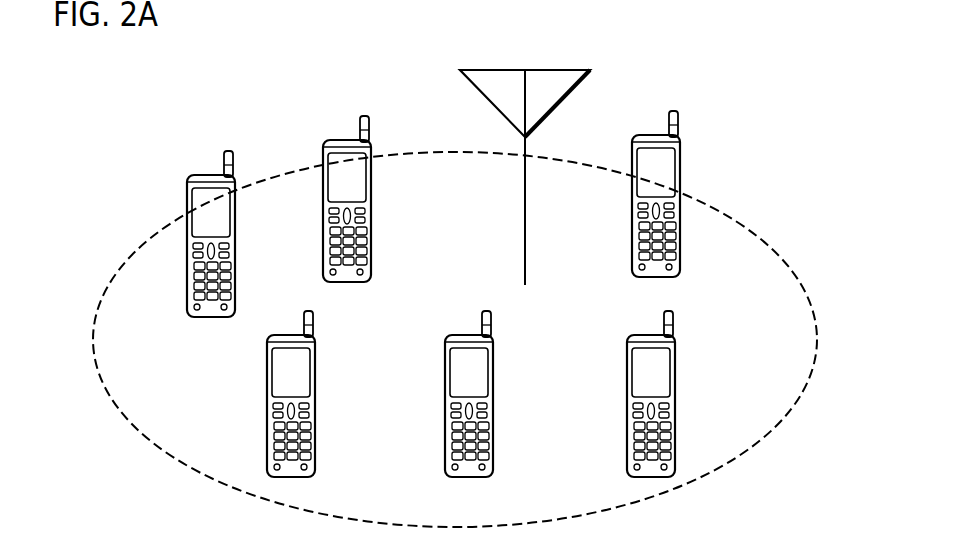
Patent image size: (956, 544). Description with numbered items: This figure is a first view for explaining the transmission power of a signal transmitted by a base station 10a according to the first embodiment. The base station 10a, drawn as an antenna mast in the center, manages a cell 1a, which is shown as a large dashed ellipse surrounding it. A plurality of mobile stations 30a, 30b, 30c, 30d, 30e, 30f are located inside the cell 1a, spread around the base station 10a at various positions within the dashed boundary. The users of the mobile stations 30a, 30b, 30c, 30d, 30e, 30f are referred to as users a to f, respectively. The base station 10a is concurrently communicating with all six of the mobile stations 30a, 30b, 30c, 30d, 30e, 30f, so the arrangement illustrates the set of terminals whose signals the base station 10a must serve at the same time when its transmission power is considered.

The cell 1a is at (462, 339).
The base station 10a is at (516, 177).
The mobile station 30a is at (310, 180).
The mobile station 30b is at (167, 216).
The mobile station 30c is at (249, 394).
The mobile station 30d is at (506, 394).
The mobile station 30e is at (688, 393).
The mobile station 30f is at (702, 192).